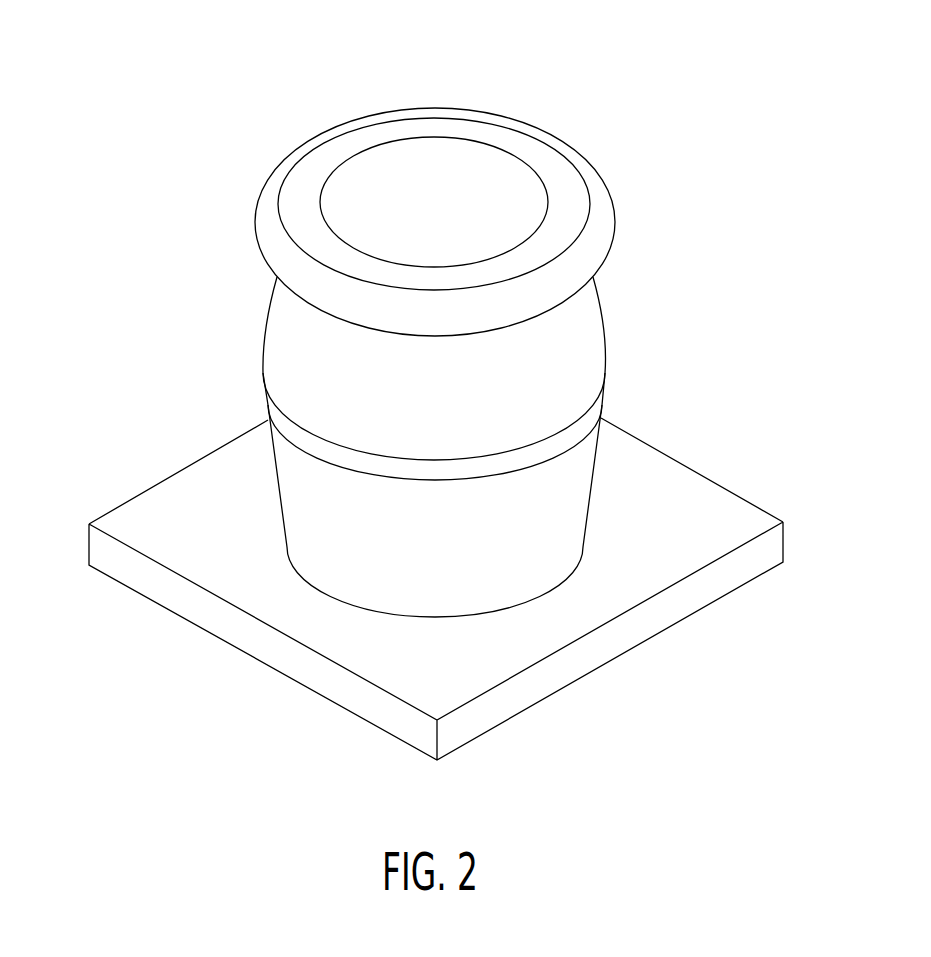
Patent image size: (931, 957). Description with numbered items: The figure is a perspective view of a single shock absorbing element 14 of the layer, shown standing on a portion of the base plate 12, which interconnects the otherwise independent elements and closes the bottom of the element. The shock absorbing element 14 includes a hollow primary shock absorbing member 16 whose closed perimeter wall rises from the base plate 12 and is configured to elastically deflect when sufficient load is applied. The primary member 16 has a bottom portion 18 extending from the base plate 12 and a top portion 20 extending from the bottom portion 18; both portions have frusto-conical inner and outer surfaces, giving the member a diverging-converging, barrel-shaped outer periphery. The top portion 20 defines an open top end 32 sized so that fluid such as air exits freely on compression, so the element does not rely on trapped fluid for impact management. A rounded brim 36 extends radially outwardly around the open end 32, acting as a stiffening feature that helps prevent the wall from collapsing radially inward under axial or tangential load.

The base plate 12 is at (657, 507).
The shock absorbing element 14 is at (390, 173).
The hollow primary shock absorbing member 16 is at (418, 399).
The bottom portion 18 is at (332, 518).
The top portion 20 is at (308, 353).
The open top end 32 is at (425, 172).
The brim 36 is at (277, 245).